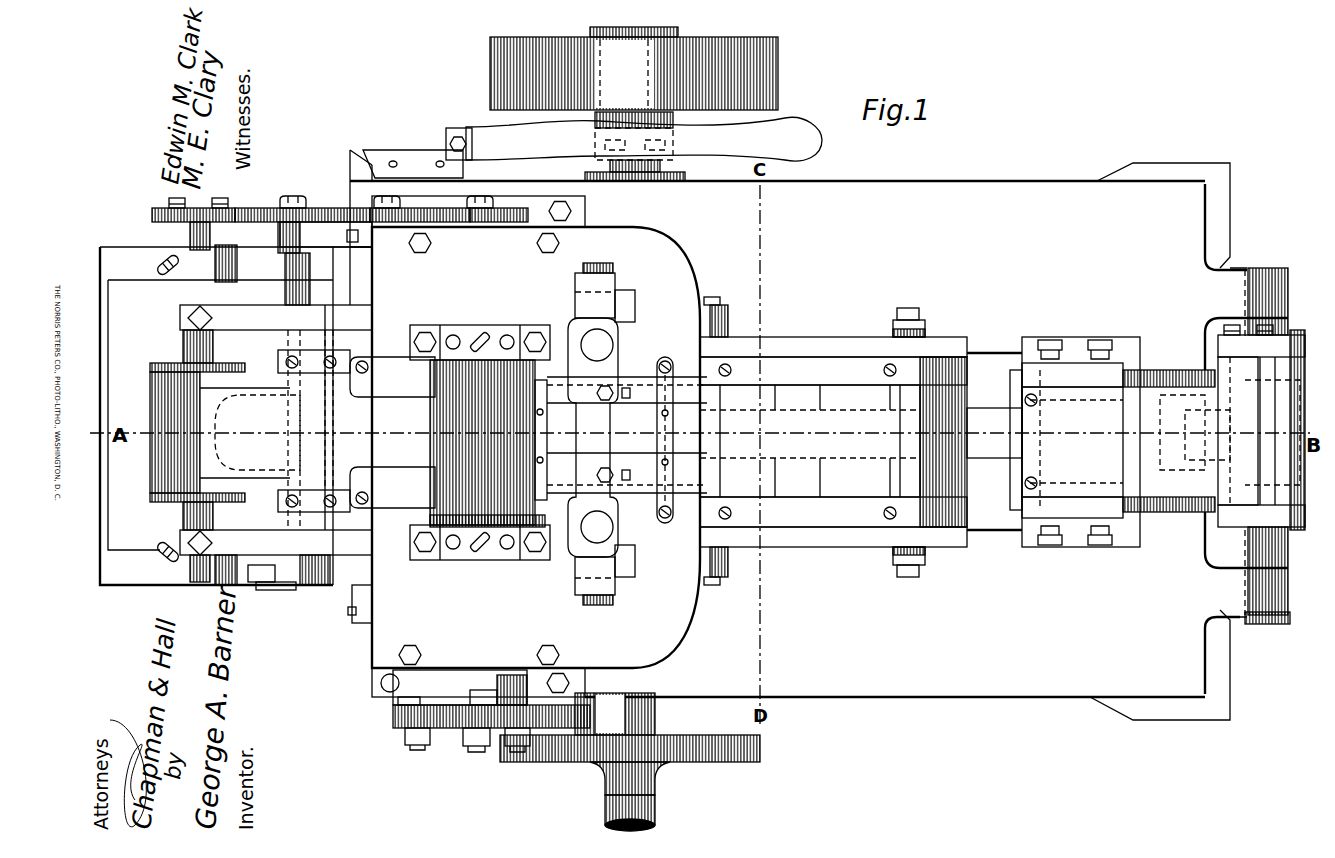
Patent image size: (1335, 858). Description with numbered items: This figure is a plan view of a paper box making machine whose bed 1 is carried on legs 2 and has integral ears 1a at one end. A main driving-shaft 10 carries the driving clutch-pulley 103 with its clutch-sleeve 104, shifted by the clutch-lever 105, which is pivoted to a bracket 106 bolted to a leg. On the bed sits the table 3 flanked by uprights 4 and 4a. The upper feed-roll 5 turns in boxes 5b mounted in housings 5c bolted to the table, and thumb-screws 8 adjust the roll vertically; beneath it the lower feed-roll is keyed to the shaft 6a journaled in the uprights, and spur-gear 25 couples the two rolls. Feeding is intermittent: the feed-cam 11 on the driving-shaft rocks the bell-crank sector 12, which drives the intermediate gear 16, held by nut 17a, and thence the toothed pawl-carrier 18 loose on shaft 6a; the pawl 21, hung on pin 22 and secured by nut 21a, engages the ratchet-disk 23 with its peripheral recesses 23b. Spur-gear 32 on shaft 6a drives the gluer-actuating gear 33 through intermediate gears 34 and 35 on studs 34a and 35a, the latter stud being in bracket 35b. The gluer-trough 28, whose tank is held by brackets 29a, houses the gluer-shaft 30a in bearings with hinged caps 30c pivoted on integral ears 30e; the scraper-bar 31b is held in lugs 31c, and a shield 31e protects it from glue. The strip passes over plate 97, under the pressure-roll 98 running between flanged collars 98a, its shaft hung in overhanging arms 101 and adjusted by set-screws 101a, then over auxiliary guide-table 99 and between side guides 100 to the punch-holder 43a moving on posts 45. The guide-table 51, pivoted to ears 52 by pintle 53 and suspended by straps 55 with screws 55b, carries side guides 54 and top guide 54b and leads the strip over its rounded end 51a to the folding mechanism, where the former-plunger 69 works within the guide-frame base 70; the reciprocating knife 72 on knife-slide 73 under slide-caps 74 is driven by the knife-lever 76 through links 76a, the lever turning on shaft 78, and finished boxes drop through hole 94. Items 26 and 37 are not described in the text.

The bed 1 is at (880, 192).
The integral ears 1a is at (1234, 268).
The legs 2 is at (350, 150).
The table 3 is at (672, 640).
The upright 4 is at (590, 684).
The upright 4a is at (586, 211).
The upper feed-roll 5 is at (432, 425).
The boxes 5b is at (500, 329).
The housings 5c is at (540, 330).
The shaft 6a is at (476, 752).
The thumb-screws 8 is at (475, 335).
The main driving-shaft 10 is at (662, 177).
The feed-cam 11 is at (760, 753).
The sector 12 is at (630, 720).
The intermediate gear 16 is at (573, 725).
The nut 17a is at (516, 752).
The pawl-carrier 18 is at (440, 730).
The pawl 21 is at (405, 700).
The nut 21a is at (415, 747).
The pin 22 is at (395, 690).
The ratchet-disk 23 is at (535, 690).
The peripheral recesses 23b is at (490, 685).
The spur-gear 25 is at (540, 520).
The bracket plate 26 is at (430, 672).
The gluer-trough 28 is at (113, 247).
The brackets 29a is at (356, 600).
The gluer-shaft 30a is at (190, 234).
The hinged caps 30c is at (200, 262).
The integral ears 30e is at (250, 268).
The scraper-bar 31b is at (290, 530).
The lugs 31c is at (292, 272).
The shield 31e is at (318, 586).
The spur-gear 32 is at (518, 208).
The gluer-actuating gear 33 is at (160, 207).
The intermediate gear 34 is at (418, 208).
The stud 34a is at (392, 198).
The intermediate gear 35 is at (325, 208).
The stud 35a is at (293, 196).
The bracket 35b is at (280, 248).
The block 37 is at (268, 590).
The punch-holder 43a is at (605, 433).
The posts 45 is at (612, 345).
The guide-table 51 is at (858, 535).
The rounded end 51a is at (950, 338).
The ears 52 is at (728, 318).
The pintle 53 is at (716, 297).
The side guides 54 is at (812, 358).
The top guide 54b is at (835, 466).
The straps 55 is at (895, 336).
The screws 55b is at (908, 308).
The former-plunger 69 is at (995, 468).
The guide-frame base 70 is at (1118, 340).
The reciprocating knife 72 is at (1008, 388).
The knife-slide 73 is at (1152, 370).
The slide-caps 74 is at (1070, 360).
The knife-lever 76 is at (1282, 503).
The links 76a is at (1262, 345).
The shaft 78 is at (1265, 625).
The hole 94 is at (983, 353).
The plate 97 is at (152, 385).
The pressure-roll 98 is at (162, 368).
The flanged collars 98a is at (183, 358).
The auxiliary guide-table 99 is at (280, 356).
The side guides 100 is at (352, 376).
The overhanging arms 101 is at (240, 302).
The set-screws 101a is at (192, 318).
The driving clutch-pulley 103 is at (778, 52).
The clutch-sleeve 104 is at (673, 122).
The clutch-lever 105 is at (782, 130).
The bracket 106 is at (405, 160).